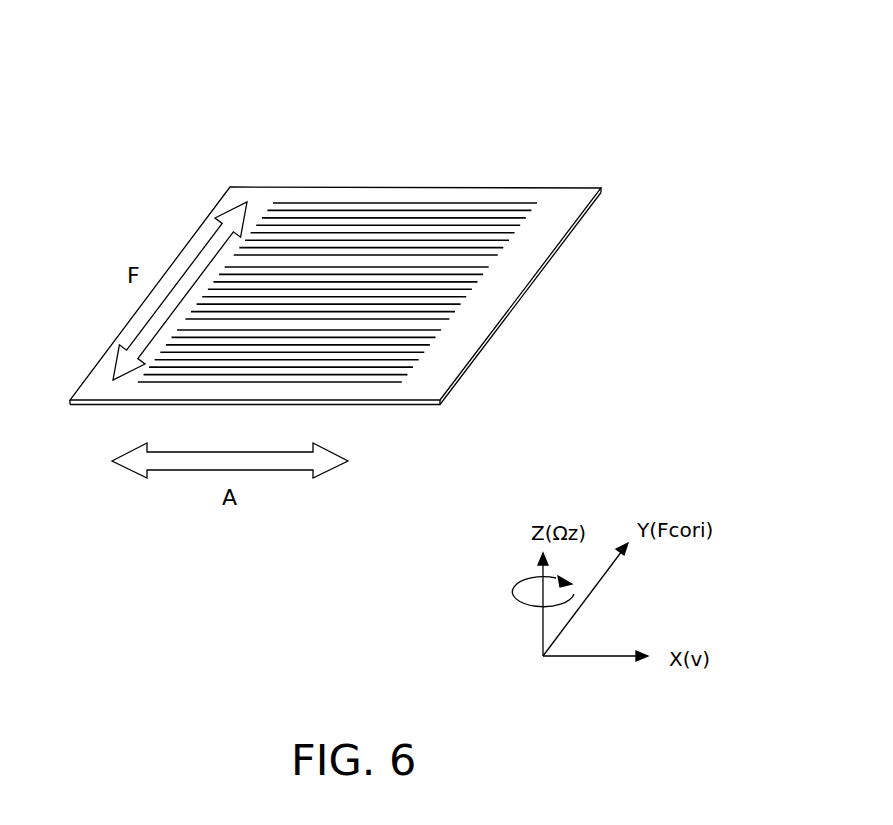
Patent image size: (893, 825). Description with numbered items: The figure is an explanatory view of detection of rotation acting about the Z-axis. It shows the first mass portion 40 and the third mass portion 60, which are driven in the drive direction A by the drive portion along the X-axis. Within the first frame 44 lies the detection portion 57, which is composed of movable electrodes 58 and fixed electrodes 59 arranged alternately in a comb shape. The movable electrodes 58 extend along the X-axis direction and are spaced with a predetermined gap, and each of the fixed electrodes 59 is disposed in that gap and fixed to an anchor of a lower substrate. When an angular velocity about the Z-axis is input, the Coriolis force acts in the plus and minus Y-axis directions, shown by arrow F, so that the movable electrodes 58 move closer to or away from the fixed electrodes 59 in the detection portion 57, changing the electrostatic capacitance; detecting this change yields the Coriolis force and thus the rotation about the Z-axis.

The first mass portion 40 is at (358, 88).
The third mass portion 60 is at (339, 252).
The first frame 44 is at (563, 200).
The detection portion 57 is at (448, 175).
The movable electrodes 58 is at (522, 220).
The fixed electrodes 59 is at (485, 248).